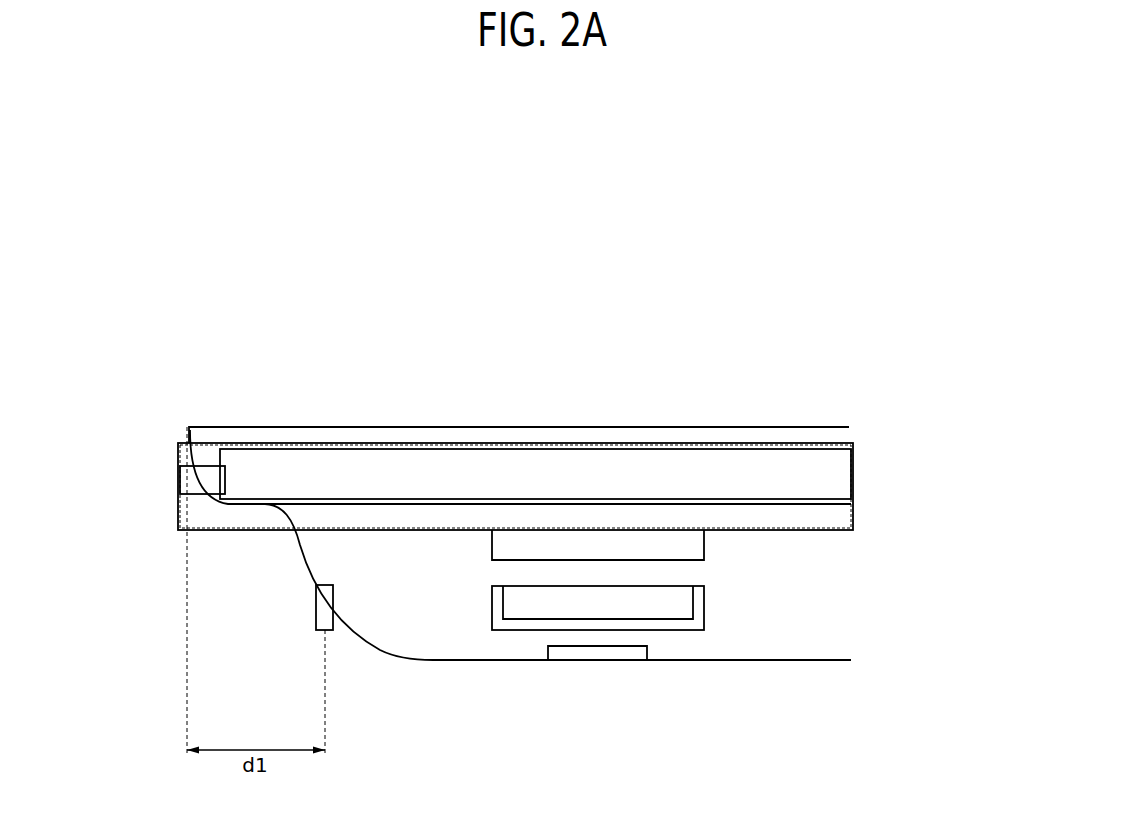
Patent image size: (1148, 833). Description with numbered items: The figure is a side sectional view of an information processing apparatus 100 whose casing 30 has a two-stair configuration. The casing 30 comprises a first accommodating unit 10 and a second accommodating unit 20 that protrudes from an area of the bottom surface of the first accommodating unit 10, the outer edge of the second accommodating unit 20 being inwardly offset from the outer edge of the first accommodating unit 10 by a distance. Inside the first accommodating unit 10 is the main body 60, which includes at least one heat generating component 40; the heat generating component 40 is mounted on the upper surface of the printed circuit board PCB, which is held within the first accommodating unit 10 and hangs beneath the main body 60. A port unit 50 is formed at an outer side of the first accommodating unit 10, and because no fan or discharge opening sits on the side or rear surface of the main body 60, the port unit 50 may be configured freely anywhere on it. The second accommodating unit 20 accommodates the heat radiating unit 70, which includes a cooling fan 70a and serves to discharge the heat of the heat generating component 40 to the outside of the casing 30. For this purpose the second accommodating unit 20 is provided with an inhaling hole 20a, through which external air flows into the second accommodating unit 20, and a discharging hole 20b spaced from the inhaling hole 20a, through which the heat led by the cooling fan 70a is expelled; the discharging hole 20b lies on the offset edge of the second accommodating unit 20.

The information processing apparatus 100 is at (787, 373).
The first accommodating unit 10 is at (208, 435).
The casing 30 is at (325, 423).
The main body 60 is at (857, 478).
The printed circuit board PCB is at (827, 517).
The port unit 50 is at (177, 483).
The second accommodating unit 20 is at (393, 627).
The inhaling hole 20a is at (598, 656).
The discharging hole 20b is at (310, 612).
The heat generating component 40 is at (708, 552).
The heat radiating unit 70 is at (515, 632).
The cooling fan 70a is at (675, 622).